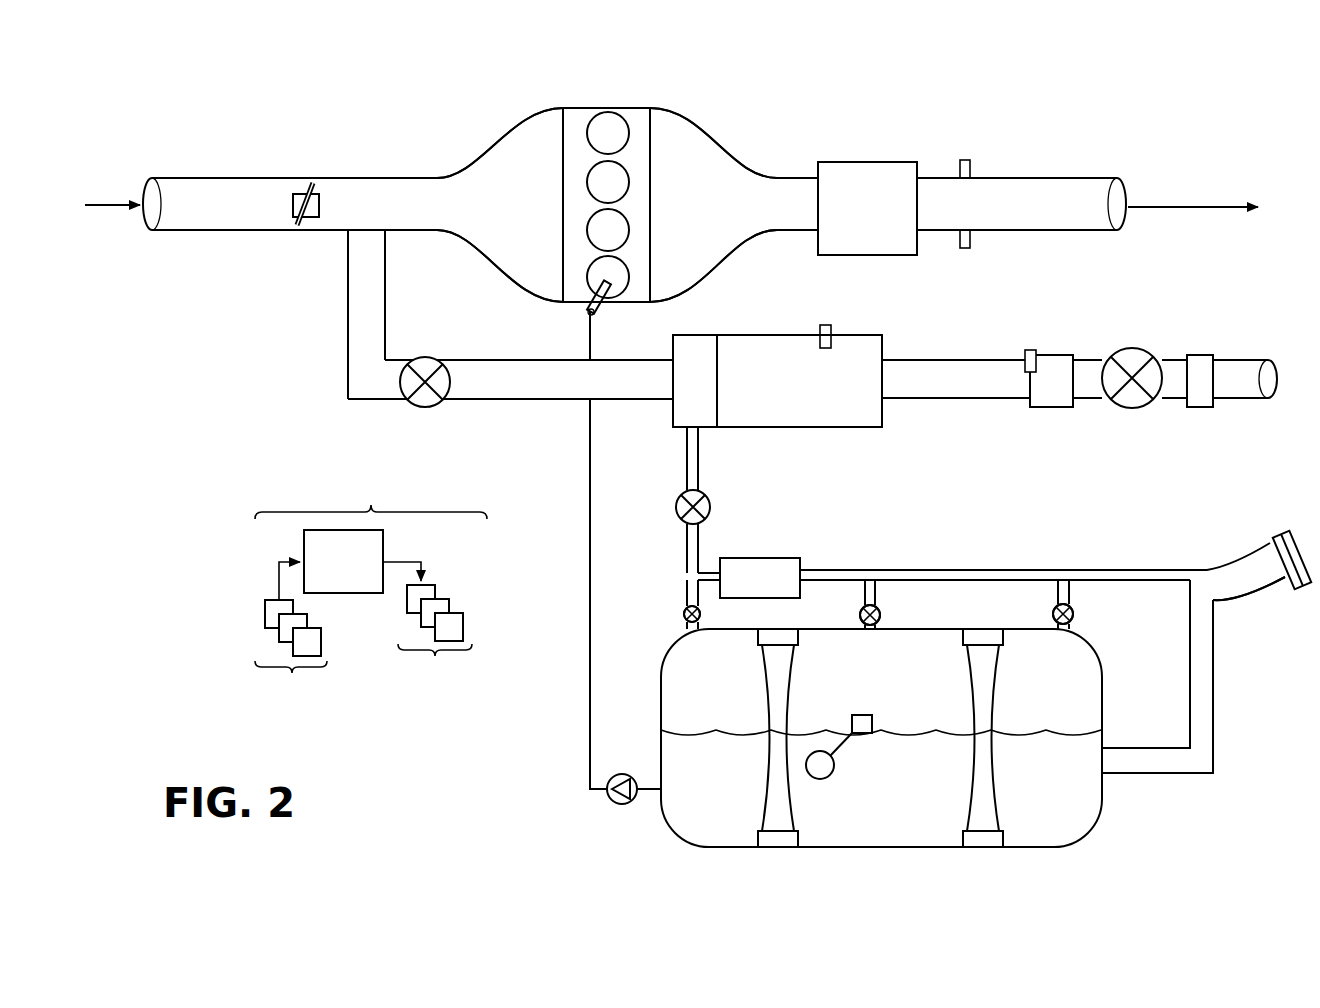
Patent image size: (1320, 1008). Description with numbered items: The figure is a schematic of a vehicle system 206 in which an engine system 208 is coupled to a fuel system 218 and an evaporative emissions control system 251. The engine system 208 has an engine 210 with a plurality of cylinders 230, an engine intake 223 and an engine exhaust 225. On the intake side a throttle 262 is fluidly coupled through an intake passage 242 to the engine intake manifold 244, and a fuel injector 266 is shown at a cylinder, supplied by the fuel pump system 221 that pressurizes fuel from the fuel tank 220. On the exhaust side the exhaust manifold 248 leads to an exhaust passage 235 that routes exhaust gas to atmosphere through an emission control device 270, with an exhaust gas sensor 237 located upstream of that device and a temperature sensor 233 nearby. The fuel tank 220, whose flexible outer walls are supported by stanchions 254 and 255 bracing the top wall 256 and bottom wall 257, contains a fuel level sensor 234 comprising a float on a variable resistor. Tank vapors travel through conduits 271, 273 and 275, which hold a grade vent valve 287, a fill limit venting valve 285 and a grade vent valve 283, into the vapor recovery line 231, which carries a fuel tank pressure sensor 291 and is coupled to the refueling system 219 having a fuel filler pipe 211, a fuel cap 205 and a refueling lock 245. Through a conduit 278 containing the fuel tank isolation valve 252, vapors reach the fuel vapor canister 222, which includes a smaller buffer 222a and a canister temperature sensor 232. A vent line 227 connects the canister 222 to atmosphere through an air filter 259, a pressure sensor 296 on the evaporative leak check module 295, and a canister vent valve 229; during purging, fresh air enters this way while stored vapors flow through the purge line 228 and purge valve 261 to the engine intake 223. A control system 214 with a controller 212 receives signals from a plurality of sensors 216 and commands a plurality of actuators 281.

The vehicle system 206 is at (168, 128).
The throttle 262 is at (319, 209).
The intake passage 242 is at (345, 233).
The engine intake 223 is at (493, 132).
The engine intake manifold 244 is at (498, 214).
The engine 210 is at (652, 188).
The cylinders 230 is at (628, 128).
The fuel injector 266 is at (601, 306).
The engine exhaust 225 is at (812, 135).
The exhaust manifold 248 is at (704, 214).
The engine system 208 is at (930, 127).
The emission control device 270 is at (856, 162).
The exhaust gas sensor 237 is at (960, 168).
The temperature sensor 233 is at (960, 240).
The exhaust passage 235 is at (1073, 178).
The purge line 228 is at (508, 390).
The purge valve 261 is at (426, 357).
The fuel pump system 221 is at (624, 774).
The fuel vapor canister 222 is at (882, 348).
The buffer 222a is at (694, 335).
The canister temperature sensor 232 is at (825, 325).
The vent line 227 is at (893, 390).
The evaporative leak check module 295 is at (1052, 355).
The pressure sensor 296 is at (1029, 350).
The canister vent valve 229 is at (1132, 348).
The air filter 259 is at (1206, 355).
The emissions control system 251 is at (1257, 318).
The conduit 278 is at (687, 460).
The fuel tank isolation valve 252 is at (684, 518).
The conduit 271 is at (700, 603).
The grade vent valve 287 is at (683, 613).
The fuel tank pressure sensor 291 is at (800, 568).
The vapor recovery line 231 is at (1118, 570).
The conduit 273 is at (862, 600).
The fill limit venting valve 285 is at (880, 614).
The conduit 275 is at (1052, 598).
The grade vent valve 283 is at (1073, 612).
The fuel filler pipe 211 is at (1213, 672).
The refueling system 219 is at (1260, 531).
The fuel cap 205 is at (1287, 532).
The refueling lock 245 is at (1286, 592).
The fuel tank 220 is at (1103, 721).
The top wall 256 is at (921, 629).
The bottom wall 257 is at (895, 847).
The stanchion 254 is at (764, 746).
The stanchion 255 is at (998, 746).
The fuel level sensor 234 is at (866, 715).
The fuel system 218 is at (1150, 810).
The control system 214 is at (371, 490).
The controller 212 is at (350, 565).
The sensors 216 is at (291, 656).
The actuators 281 is at (435, 641).